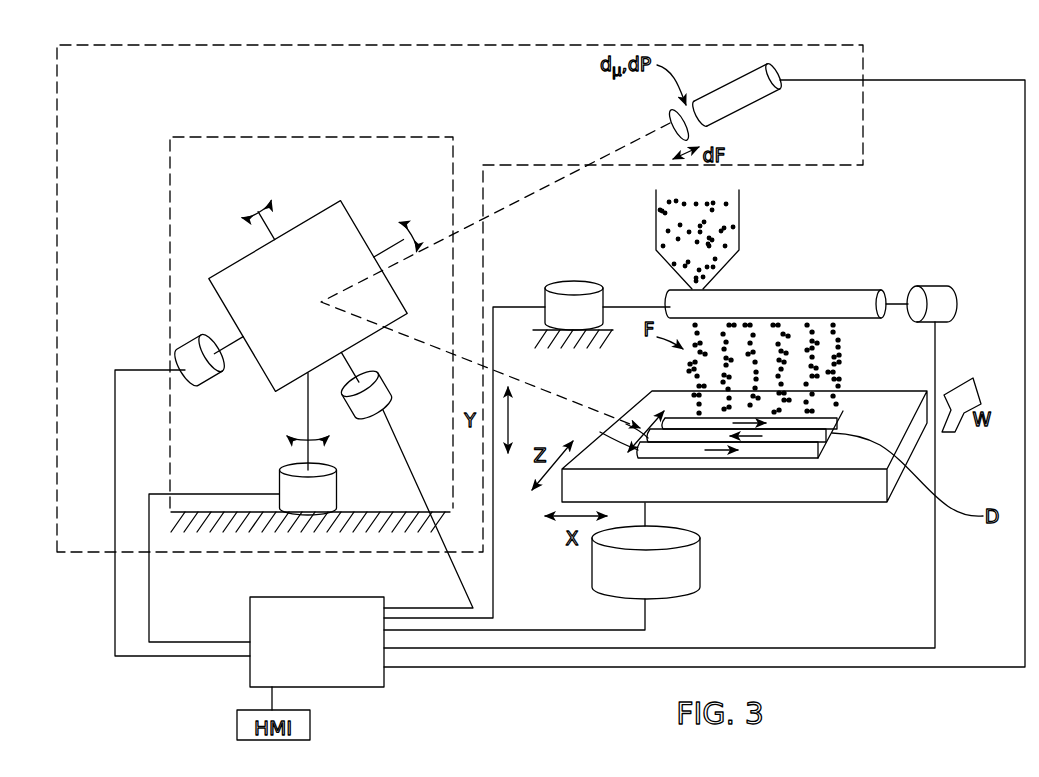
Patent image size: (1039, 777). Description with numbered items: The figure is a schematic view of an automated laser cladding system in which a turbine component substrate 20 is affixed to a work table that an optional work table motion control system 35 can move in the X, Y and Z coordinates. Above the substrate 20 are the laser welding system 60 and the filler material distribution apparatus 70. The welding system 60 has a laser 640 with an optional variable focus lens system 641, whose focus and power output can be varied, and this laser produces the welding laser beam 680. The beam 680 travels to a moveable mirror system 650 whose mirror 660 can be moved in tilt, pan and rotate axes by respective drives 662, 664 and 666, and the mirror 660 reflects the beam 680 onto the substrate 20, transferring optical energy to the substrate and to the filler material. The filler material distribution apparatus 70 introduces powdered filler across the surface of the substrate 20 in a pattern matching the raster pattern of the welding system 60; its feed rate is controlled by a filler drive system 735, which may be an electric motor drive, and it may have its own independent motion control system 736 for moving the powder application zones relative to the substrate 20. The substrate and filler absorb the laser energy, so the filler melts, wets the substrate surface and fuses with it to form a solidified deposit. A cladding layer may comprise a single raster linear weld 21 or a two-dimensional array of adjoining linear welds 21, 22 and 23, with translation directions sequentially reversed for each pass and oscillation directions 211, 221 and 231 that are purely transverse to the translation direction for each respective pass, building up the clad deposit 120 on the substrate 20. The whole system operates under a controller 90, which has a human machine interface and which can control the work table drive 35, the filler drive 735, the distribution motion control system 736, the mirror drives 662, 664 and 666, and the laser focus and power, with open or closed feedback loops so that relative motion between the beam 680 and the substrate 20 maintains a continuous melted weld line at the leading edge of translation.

The component substrate 20 is at (845, 522).
The linear weld 21 is at (760, 450).
The linear weld 22 is at (848, 449).
The linear weld 23 is at (787, 423).
The work table motion control system 35 is at (700, 570).
The laser welding system 60 is at (558, 38).
The filler material distribution apparatus 70 is at (814, 246).
The controller 90 is at (366, 670).
The layered workpiece 120 is at (743, 466).
The oscillation direction 211 is at (636, 452).
The oscillation direction 221 is at (648, 440).
The oscillation direction 231 is at (662, 420).
The laser 640 is at (779, 68).
The variable focus lens system 641 is at (669, 123).
The moveable mirror system 650 is at (320, 115).
The mirror 660 is at (331, 230).
The drive 662 is at (380, 395).
The drive 664 is at (188, 353).
The drive 666 is at (282, 487).
The laser beam 680 is at (553, 186).
The filler drive system 735 is at (945, 295).
The motion control system 736 is at (574, 290).